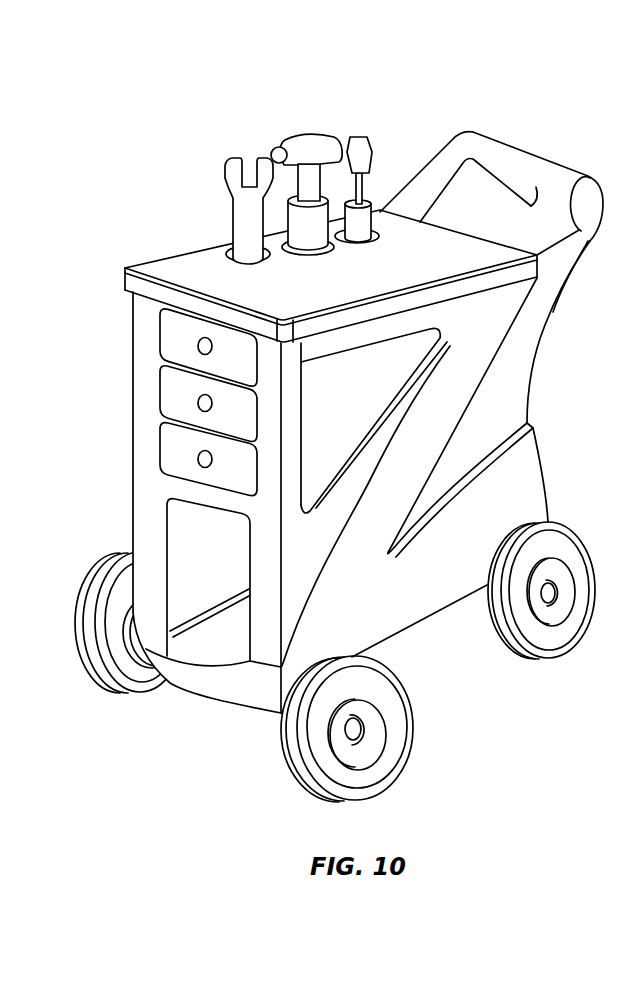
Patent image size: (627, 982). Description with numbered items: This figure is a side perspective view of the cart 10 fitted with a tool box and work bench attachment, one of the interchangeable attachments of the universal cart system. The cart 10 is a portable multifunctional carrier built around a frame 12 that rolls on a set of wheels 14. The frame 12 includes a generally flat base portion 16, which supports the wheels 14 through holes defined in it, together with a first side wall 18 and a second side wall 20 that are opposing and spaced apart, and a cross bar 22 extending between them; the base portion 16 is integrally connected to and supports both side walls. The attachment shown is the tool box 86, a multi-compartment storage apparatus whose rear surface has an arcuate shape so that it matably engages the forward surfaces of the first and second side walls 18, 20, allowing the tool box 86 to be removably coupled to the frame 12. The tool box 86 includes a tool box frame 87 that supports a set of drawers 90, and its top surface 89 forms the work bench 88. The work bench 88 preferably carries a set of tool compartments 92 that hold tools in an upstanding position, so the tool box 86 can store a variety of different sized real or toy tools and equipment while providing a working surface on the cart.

The cart 10 is at (200, 80).
The frame 12 is at (517, 377).
The wheels 14 is at (578, 536).
The base portion 16 is at (213, 693).
The first side wall 18 is at (430, 178).
The second side wall 20 is at (343, 590).
The cross bar 22 is at (528, 158).
The tool box 86 is at (121, 340).
The tool box frame 87 is at (165, 500).
The work bench 88 is at (172, 262).
The top surface 89 is at (306, 308).
The drawers 90 is at (172, 396).
The tool compartments 92 is at (380, 234).